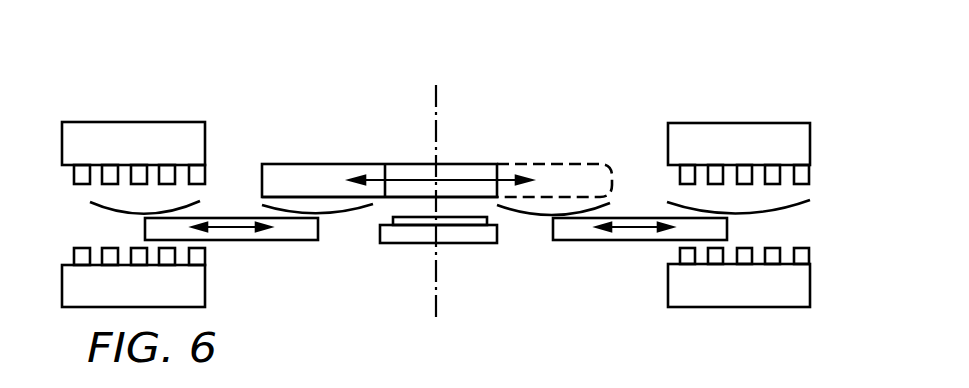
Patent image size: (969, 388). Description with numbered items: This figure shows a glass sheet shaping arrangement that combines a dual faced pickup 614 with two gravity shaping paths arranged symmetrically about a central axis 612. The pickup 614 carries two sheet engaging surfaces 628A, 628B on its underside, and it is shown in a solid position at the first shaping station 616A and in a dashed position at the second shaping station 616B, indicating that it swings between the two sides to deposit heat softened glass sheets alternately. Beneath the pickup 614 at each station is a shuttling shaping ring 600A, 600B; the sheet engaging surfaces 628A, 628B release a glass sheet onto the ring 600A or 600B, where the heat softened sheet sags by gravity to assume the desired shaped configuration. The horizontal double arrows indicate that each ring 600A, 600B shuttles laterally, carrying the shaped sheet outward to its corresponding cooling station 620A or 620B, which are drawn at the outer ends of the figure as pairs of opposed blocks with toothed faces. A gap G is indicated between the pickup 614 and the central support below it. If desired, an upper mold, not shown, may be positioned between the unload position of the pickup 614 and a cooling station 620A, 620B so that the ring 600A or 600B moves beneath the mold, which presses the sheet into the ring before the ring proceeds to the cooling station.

The centerline of rotation 612 is at (452, 77).
The pickup 614 is at (338, 164).
The shaping station 616A is at (350, 77).
The shaping station 616B is at (585, 77).
The cooling station 620A is at (170, 77).
The cooling station 620B is at (772, 77).
The shuttling shaping ring 600A is at (117, 212).
The shuttling shaping ring 600B is at (773, 209).
The sheet engaging surface 628A is at (341, 198).
The sheet engaging surface 628B is at (468, 197).
The gap G is at (421, 211).